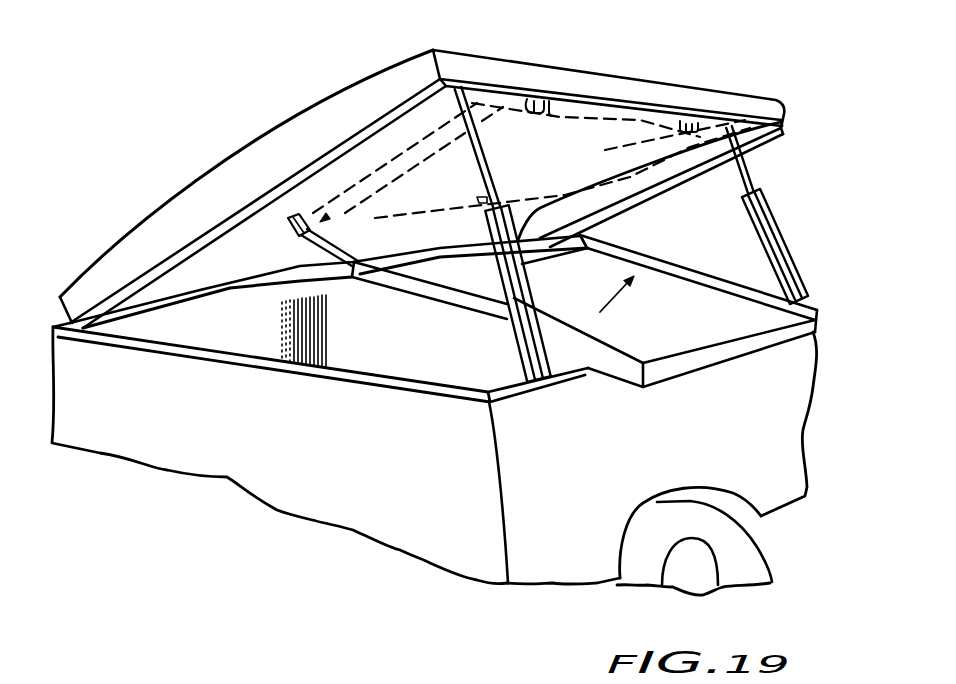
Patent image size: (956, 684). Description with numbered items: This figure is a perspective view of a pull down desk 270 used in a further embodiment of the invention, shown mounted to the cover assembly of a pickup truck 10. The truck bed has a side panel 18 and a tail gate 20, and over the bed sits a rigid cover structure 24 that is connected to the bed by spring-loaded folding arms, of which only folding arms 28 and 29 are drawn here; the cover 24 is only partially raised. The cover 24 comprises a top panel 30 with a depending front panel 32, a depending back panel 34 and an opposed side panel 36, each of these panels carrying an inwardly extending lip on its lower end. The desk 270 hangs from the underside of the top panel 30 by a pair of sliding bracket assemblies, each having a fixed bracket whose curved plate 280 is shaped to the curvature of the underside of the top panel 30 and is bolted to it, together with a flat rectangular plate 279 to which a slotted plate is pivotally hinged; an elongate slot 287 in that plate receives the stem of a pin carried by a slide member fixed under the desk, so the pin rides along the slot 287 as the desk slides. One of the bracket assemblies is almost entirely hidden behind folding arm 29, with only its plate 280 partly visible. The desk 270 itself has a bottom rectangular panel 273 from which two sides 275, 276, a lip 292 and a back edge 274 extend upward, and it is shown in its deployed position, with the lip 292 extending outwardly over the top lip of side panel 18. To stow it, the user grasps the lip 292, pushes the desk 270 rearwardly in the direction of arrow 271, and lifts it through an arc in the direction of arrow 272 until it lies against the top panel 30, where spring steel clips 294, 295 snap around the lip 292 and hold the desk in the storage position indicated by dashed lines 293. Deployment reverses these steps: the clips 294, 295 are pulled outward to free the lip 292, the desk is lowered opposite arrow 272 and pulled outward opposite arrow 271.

The pickup truck 10 is at (786, 519).
The side panel 18 is at (571, 573).
The tail gate 20 is at (411, 542).
The rigid cover structure 24 is at (636, 64).
The folding arm 28 is at (792, 242).
The folding arm 29 is at (510, 358).
The top panel 30 is at (262, 212).
The front panel 32 is at (665, 188).
The back panel 34 is at (148, 234).
The side panel 36 is at (233, 288).
The pull down desk 270 is at (802, 348).
The arrow 271 is at (594, 322).
The arrow 272 is at (612, 302).
The bottom rectangular panel 273 is at (692, 300).
The back edge 274 is at (478, 254).
The side 275 is at (445, 300).
The side 276 is at (617, 246).
The flat rectangular plate 279 is at (297, 243).
The curved plate 280 is at (290, 217).
The elongate slot 287 is at (352, 232).
The lip 292 is at (680, 364).
The dashed lines 293 is at (403, 145).
The spring steel clip 294 is at (540, 114).
The spring steel clip 295 is at (645, 137).